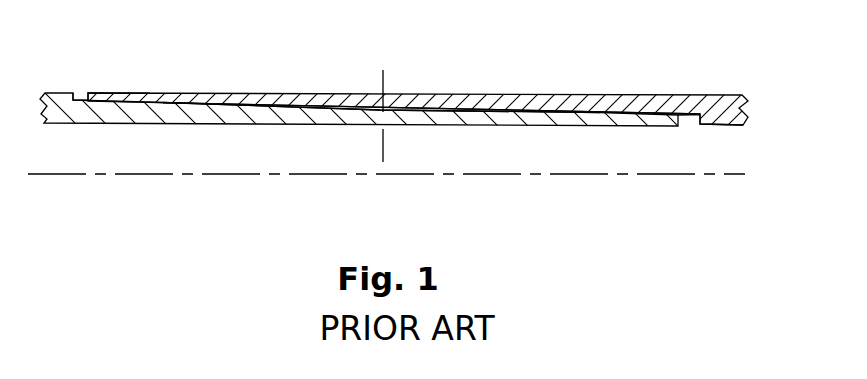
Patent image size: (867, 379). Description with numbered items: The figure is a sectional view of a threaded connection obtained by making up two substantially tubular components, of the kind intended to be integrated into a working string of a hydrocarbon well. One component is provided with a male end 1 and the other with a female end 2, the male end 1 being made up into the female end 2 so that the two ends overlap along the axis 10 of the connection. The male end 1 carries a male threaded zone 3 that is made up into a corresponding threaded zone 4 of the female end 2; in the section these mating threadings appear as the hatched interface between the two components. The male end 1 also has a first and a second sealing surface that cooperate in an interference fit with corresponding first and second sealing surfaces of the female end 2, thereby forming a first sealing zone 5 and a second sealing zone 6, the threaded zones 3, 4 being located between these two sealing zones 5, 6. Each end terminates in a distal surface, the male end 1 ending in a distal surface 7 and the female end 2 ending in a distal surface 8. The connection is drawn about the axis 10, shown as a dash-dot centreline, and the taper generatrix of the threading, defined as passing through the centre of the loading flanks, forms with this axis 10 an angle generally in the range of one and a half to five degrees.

The male end 1 is at (135, 129).
The female end 2 is at (494, 90).
The male threaded zone 3 is at (327, 112).
The threaded zone 4 is at (348, 104).
The first sealing zone 5 is at (637, 113).
The second sealing zone 6 is at (133, 97).
The distal surface 7 is at (683, 120).
The distal surface 8 is at (82, 97).
The axis 10 is at (405, 175).